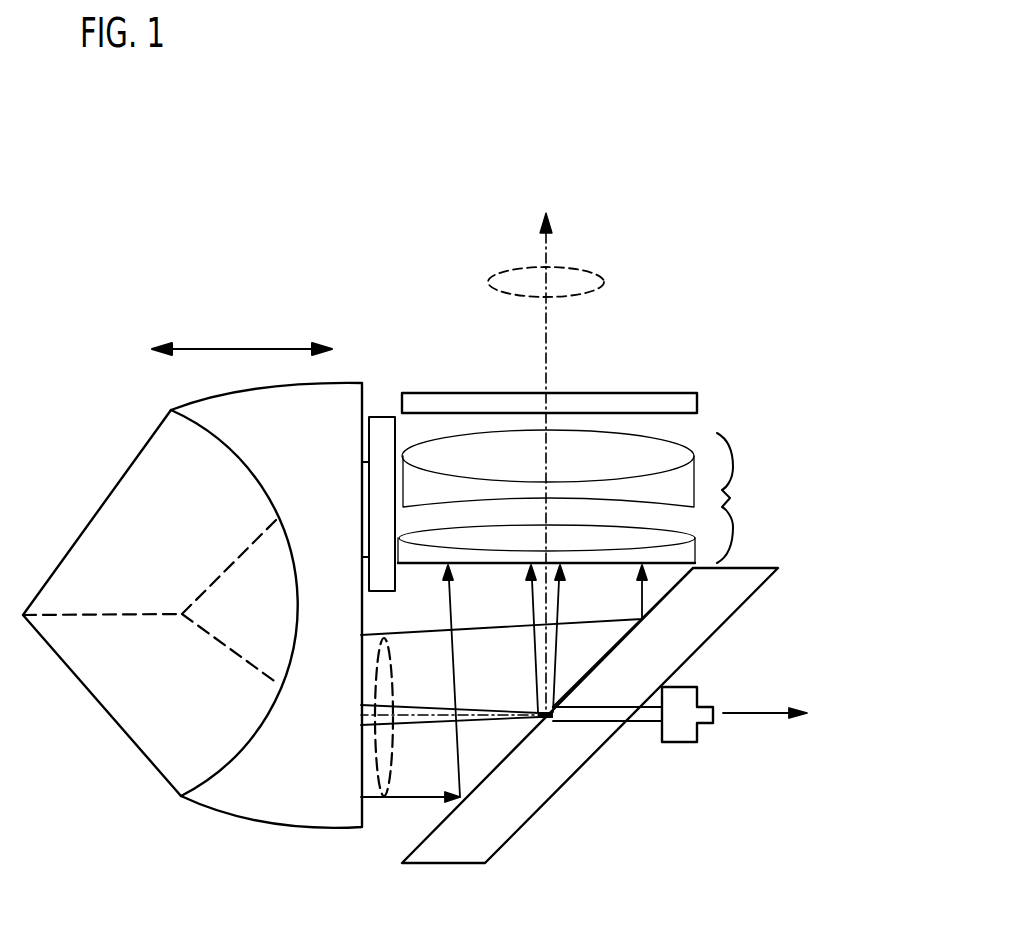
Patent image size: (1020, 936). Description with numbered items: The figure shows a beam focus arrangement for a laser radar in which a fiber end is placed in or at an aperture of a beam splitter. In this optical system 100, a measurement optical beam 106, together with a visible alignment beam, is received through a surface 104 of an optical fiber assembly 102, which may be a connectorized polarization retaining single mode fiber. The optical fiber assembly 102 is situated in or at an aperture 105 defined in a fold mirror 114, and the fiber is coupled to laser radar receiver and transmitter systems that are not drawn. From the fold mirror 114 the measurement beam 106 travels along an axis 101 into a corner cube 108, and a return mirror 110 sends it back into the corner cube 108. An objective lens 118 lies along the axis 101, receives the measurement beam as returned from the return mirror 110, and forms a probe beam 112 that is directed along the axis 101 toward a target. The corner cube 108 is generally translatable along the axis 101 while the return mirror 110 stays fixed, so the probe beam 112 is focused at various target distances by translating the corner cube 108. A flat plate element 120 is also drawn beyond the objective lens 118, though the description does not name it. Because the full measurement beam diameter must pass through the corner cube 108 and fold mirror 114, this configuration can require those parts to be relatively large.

The optical system 100 is at (500, 186).
The axis 101 is at (548, 382).
The optical fiber assembly 102 is at (685, 743).
The surface 104 is at (554, 720).
The aperture 105 is at (538, 718).
The measurement optical beam 106 is at (417, 713).
The corner cube 108 is at (232, 812).
The return mirror 110 is at (380, 415).
The probe beam 112 is at (588, 266).
The fold mirror 114 is at (748, 566).
The objective lens 118 is at (735, 470).
The window plate 120 is at (682, 393).